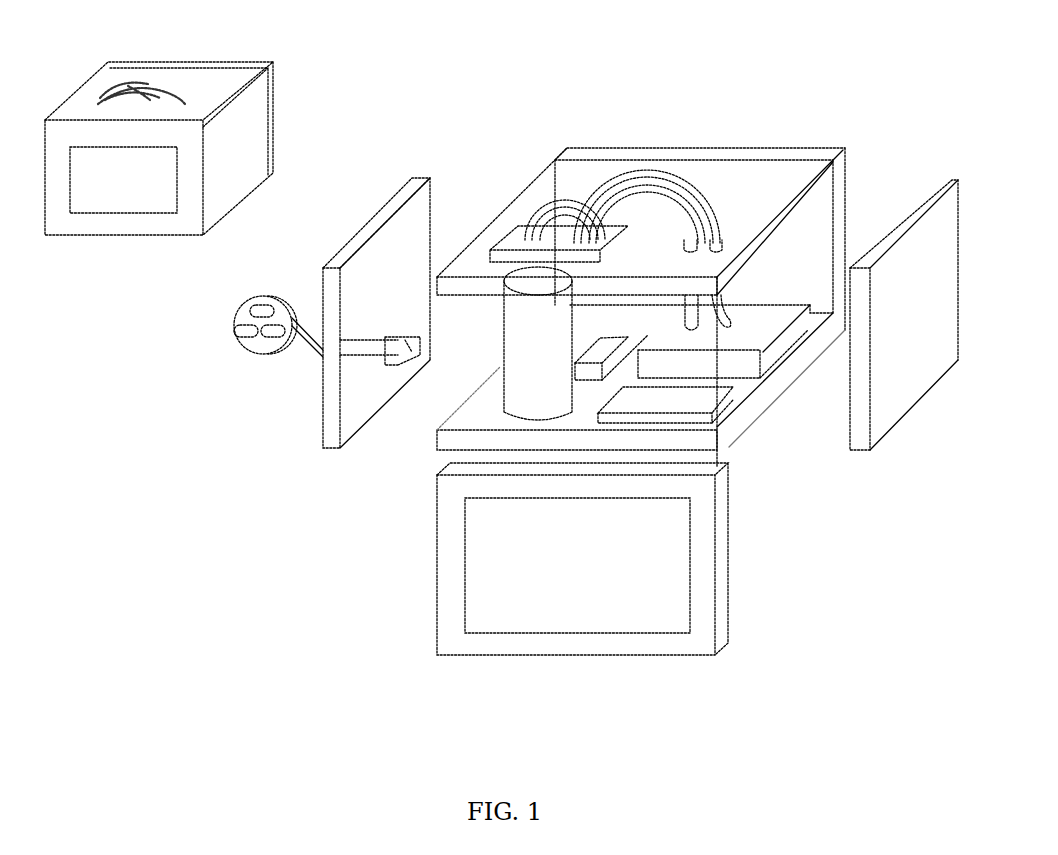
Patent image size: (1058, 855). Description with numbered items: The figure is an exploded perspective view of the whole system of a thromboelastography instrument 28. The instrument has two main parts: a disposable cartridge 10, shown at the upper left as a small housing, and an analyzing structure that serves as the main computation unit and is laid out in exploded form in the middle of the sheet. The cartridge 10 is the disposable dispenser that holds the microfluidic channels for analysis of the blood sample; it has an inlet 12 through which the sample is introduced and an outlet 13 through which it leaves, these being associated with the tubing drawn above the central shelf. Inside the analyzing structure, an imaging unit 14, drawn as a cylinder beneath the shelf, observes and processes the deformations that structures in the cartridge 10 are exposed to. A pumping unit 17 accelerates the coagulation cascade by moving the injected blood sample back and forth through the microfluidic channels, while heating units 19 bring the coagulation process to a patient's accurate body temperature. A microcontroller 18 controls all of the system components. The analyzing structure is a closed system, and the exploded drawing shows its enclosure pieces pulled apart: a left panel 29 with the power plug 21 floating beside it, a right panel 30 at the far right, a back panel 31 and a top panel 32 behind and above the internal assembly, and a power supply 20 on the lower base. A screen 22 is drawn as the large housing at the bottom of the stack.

The cartridge 10 is at (528, 250).
The inlet 12 is at (537, 242).
The outlet 13 is at (573, 240).
The imaging unit 14 is at (515, 302).
The pumping unit 17 is at (757, 353).
The microcontroller 18 is at (712, 400).
The heating units 19 is at (605, 240).
The power supply 20 is at (603, 332).
The power plug 21 is at (258, 372).
The screen 22 is at (520, 597).
The thromboelastography instrument 28 is at (282, 118).
The left panel 29 is at (335, 457).
The right panel 30 is at (892, 443).
The back panel 31 is at (827, 227).
The top panel 32 is at (705, 178).